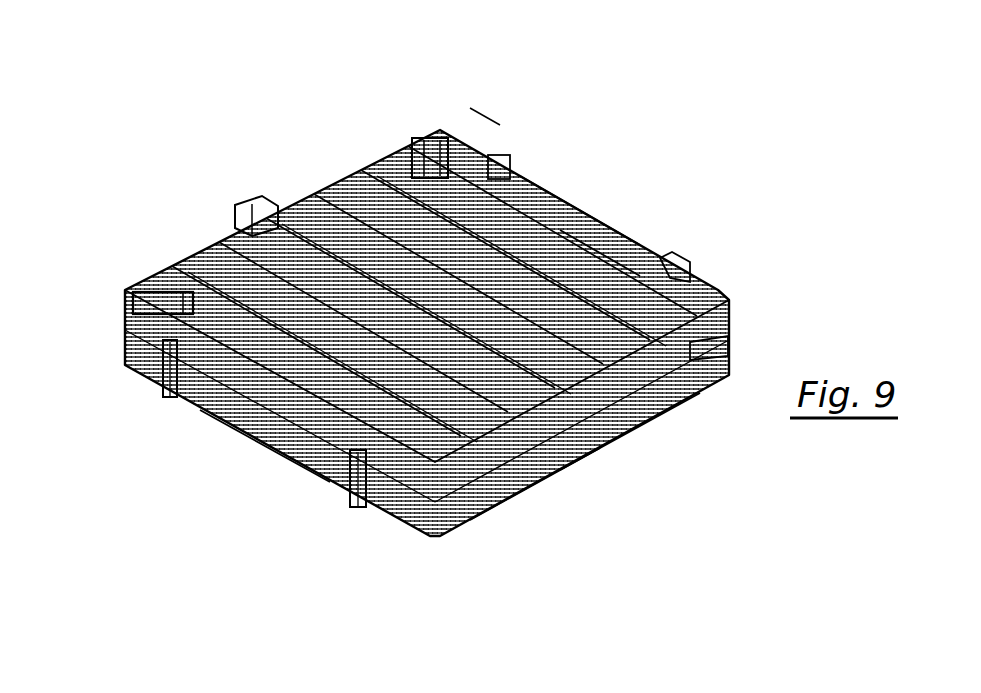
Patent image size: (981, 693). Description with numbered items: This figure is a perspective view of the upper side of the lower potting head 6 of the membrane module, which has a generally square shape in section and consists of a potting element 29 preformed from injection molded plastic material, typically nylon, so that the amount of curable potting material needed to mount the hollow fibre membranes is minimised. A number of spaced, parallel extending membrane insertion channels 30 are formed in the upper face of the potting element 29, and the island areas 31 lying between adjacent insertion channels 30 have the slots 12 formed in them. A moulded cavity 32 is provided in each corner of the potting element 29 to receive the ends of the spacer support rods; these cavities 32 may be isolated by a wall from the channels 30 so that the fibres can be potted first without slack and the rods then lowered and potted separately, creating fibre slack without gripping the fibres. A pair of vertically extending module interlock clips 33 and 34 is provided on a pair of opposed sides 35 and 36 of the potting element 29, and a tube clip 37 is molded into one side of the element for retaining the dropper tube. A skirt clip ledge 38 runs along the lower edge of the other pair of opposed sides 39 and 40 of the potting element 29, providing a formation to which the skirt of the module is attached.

The lower potting head 6 is at (470, 108).
The slots 12 is at (693, 282).
The potting element 29 is at (585, 218).
The membrane insertion channels 30 is at (520, 172).
The island areas 31 is at (623, 425).
The moulded cavity 32 is at (420, 136).
The module interlock clip 33 is at (163, 393).
The module interlock clip 34 is at (355, 506).
The side of potting element 35 is at (265, 447).
The side of potting element 36 is at (560, 200).
The tube clip 37 is at (255, 205).
The skirt clip ledge 38 is at (545, 478).
The side of potting element 39 is at (183, 268).
The side of potting element 40 is at (730, 352).